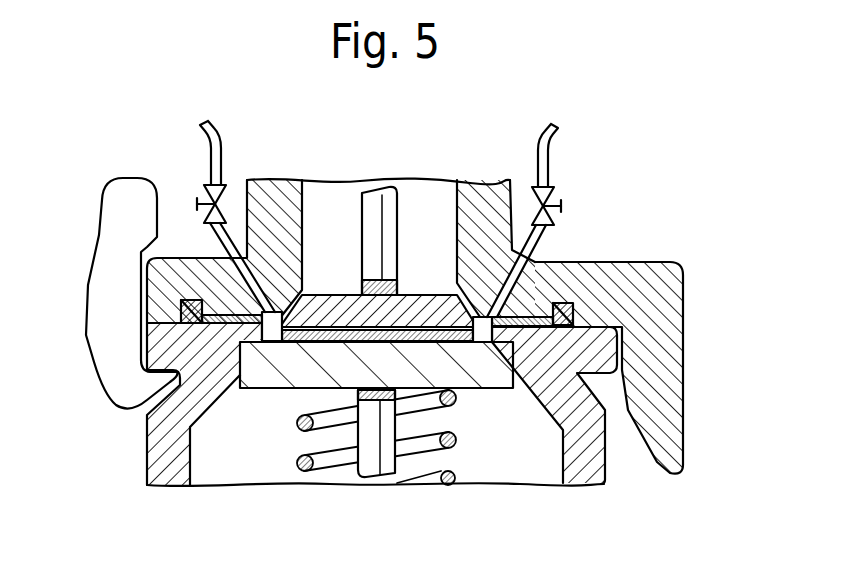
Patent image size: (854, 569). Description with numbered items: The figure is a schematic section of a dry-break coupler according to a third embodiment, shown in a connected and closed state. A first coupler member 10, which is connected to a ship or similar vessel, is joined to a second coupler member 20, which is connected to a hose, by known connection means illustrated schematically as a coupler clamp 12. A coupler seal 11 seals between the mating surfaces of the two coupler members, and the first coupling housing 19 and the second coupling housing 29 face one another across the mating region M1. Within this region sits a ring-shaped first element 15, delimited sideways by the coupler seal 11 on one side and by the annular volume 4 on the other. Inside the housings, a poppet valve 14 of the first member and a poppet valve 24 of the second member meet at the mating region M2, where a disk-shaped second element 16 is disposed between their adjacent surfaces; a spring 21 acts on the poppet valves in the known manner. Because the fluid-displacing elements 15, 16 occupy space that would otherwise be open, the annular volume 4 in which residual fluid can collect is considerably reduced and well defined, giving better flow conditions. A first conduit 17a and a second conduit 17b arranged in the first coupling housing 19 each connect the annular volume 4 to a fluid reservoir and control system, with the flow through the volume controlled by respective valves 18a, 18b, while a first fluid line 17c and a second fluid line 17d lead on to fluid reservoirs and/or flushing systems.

The annular volume 4 is at (272, 342).
The first coupler member 10 is at (291, 175).
The coupler seal 11 is at (575, 319).
The coupler clamp 12 is at (85, 272).
The poppet valve 14 is at (421, 297).
The first element 15 is at (182, 321).
The second element 16 is at (330, 330).
The first conduit 17a is at (253, 266).
The second conduit 17b is at (510, 283).
The first fluid line 17c is at (218, 157).
The second fluid line 17d is at (540, 148).
The valve 18a is at (210, 190).
The valve 18b is at (550, 188).
The first coupling housing 19 is at (598, 263).
The second coupler member 20 is at (612, 474).
The spring 21 is at (417, 447).
The poppet valve 24 is at (475, 370).
The second coupling housing 29 is at (168, 448).
The mating region M1 is at (236, 323).
The mating region M2 is at (288, 340).